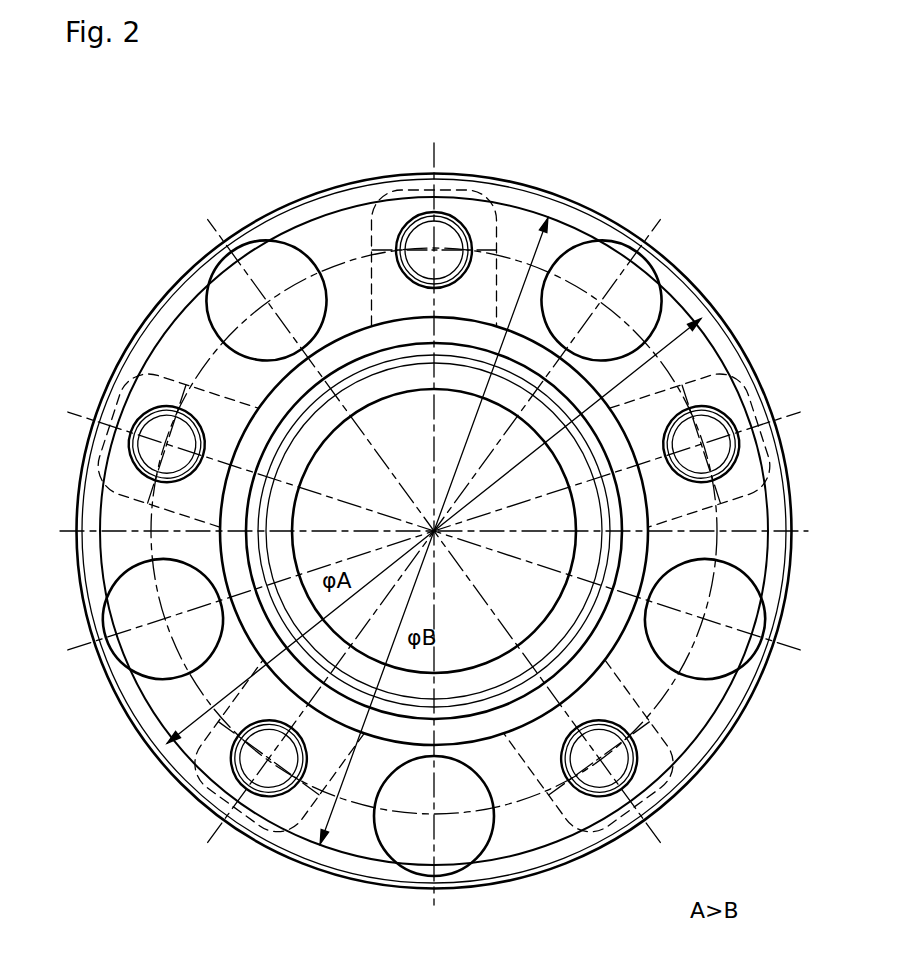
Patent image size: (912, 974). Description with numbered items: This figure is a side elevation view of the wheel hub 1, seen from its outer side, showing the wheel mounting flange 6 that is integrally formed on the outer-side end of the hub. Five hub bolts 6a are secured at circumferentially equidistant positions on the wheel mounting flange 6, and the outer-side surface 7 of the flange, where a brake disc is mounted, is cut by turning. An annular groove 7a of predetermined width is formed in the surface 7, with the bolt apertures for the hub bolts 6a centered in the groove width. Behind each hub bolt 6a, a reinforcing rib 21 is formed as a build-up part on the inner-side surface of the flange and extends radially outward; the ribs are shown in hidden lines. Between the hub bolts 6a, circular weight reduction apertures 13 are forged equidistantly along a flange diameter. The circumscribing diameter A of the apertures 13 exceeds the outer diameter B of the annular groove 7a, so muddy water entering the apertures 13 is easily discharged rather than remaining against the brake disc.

The wheel hub 1 is at (133, 335).
The wheel mounting flange 6 is at (468, 171).
The hub bolt 6a is at (427, 240).
The outer-side surface 7 is at (313, 197).
The annular groove 7a is at (508, 233).
The weight reduction aperture 13 is at (578, 266).
The reinforcing rib 21 is at (378, 212).